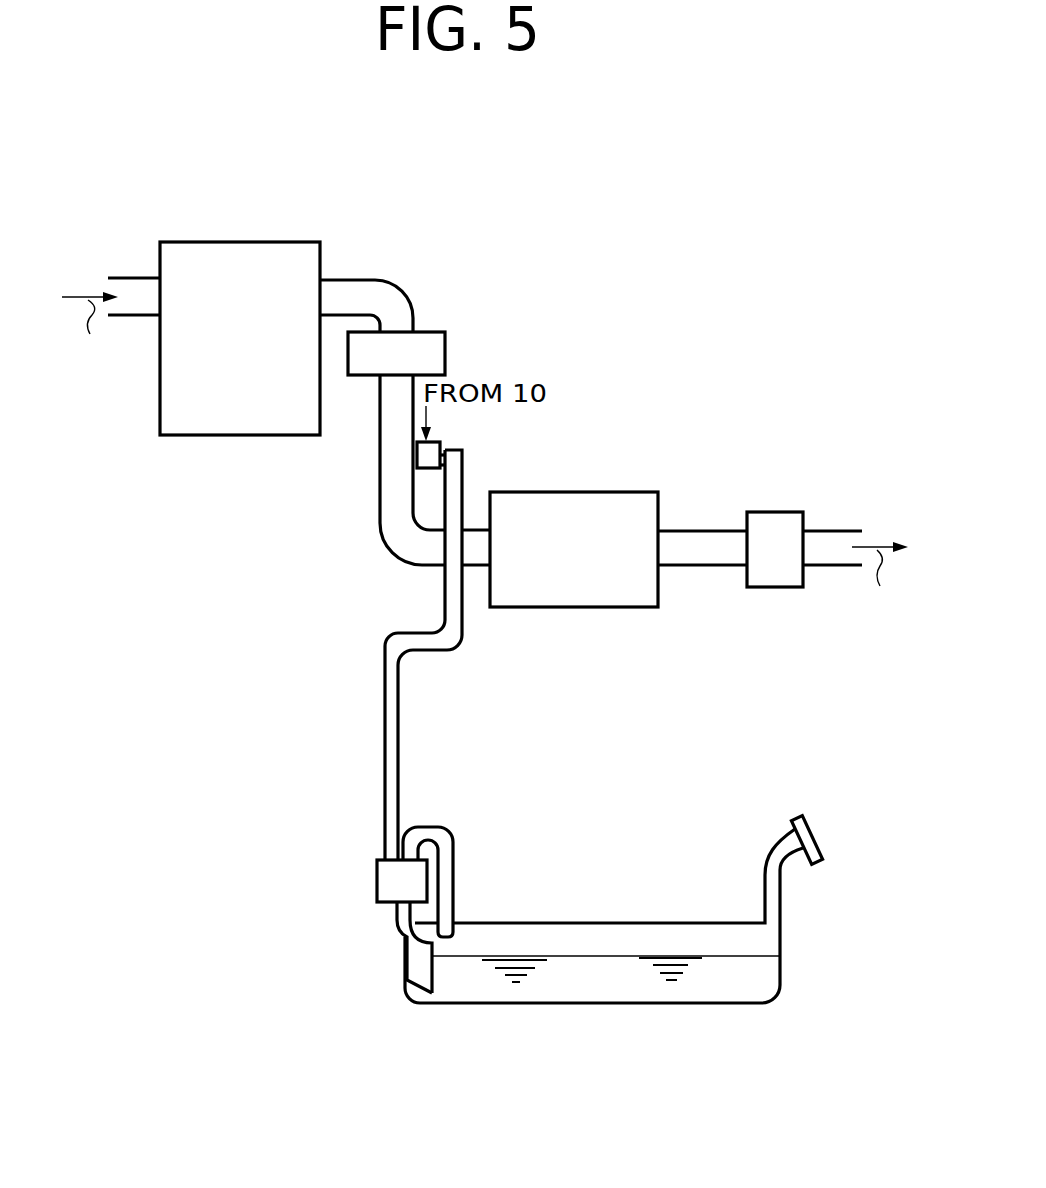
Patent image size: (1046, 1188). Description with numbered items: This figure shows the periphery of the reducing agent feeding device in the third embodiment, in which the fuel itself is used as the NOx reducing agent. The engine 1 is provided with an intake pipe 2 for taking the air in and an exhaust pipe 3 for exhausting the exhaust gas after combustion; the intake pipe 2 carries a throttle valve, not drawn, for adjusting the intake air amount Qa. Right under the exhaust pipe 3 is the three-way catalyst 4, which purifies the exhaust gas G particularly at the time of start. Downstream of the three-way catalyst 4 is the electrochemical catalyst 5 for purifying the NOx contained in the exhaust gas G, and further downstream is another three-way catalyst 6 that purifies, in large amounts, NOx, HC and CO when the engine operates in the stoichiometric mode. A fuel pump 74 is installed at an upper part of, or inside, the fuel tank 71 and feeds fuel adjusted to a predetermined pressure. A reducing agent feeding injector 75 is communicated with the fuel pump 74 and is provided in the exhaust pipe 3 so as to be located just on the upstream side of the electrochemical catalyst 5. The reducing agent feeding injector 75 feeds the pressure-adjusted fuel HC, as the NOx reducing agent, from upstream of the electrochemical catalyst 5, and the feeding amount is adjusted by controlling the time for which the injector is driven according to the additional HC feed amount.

The engine 1 is at (265, 242).
The intake pipe 2 is at (137, 278).
The exhaust pipe 3 is at (352, 280).
The three-way catalyst 4 is at (428, 332).
The electrochemical catalyst 5 is at (636, 492).
The three-way catalyst 6 is at (787, 512).
The fuel tank 71 is at (686, 925).
The fuel pump 74 is at (377, 880).
The reducing agent feeding injector 75 is at (434, 442).